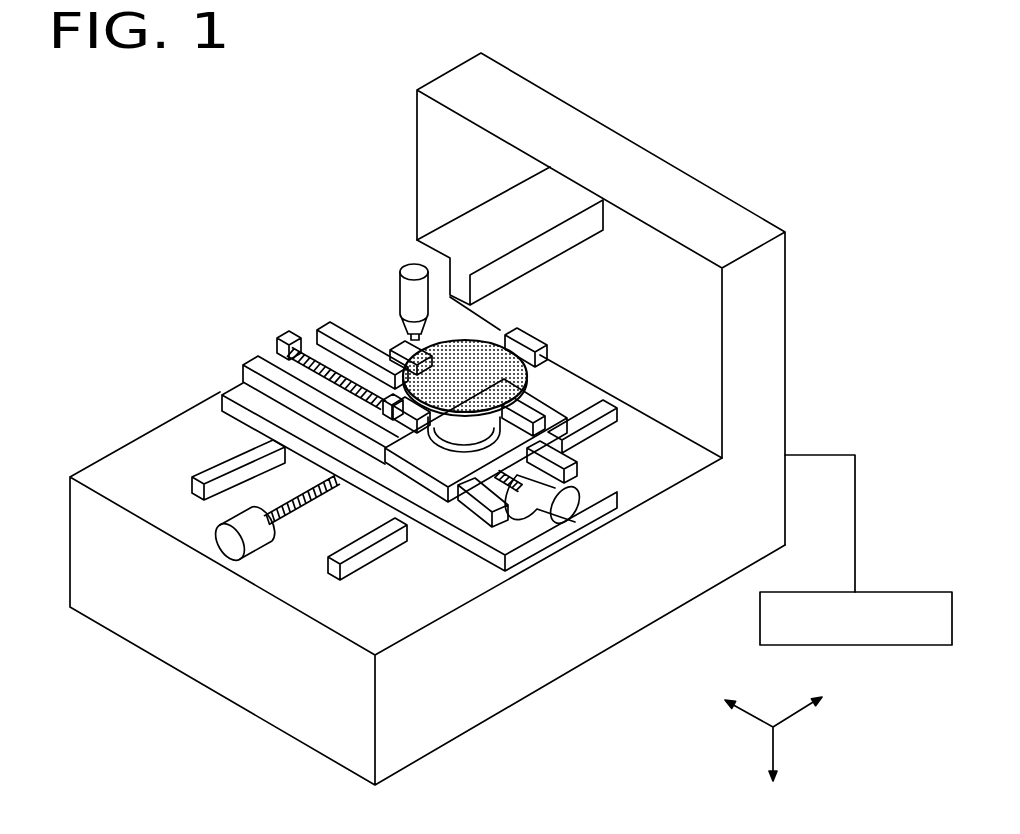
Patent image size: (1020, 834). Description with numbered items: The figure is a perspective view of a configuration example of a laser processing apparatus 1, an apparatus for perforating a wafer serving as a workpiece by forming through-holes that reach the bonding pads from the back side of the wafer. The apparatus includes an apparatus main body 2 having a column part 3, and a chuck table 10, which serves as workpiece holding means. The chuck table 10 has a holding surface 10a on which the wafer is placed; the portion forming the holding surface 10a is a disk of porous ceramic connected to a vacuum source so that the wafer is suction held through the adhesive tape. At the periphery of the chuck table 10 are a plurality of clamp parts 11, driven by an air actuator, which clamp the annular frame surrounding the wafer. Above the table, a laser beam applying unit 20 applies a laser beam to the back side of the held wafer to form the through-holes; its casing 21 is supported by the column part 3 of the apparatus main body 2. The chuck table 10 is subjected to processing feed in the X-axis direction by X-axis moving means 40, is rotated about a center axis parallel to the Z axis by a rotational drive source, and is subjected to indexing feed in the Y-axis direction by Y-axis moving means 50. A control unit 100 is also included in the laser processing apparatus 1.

The laser processing apparatus 1 is at (296, 190).
The apparatus main body 2 is at (495, 690).
The column part 3 is at (702, 352).
The chuck table 10 is at (505, 412).
The holding surface 10a is at (520, 332).
The clamp parts 11 is at (435, 342).
The laser beam applying unit 20 is at (398, 242).
The casing 21 is at (450, 240).
The X-axis moving means 40 is at (529, 536).
The Y-axis moving means 50 is at (258, 548).
The control unit 100 is at (893, 568).